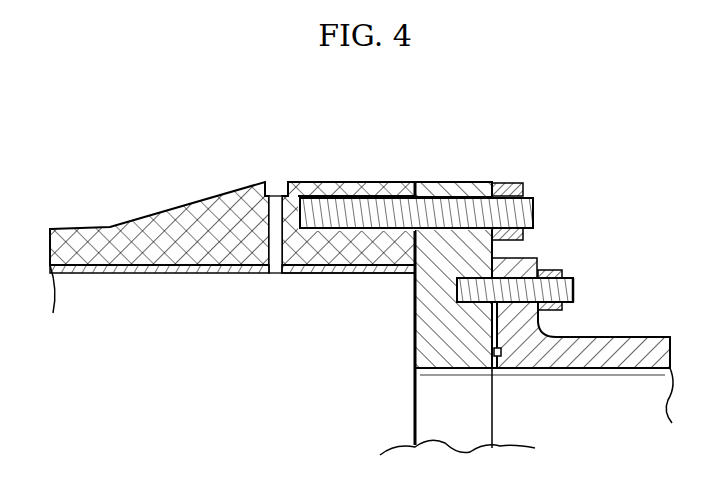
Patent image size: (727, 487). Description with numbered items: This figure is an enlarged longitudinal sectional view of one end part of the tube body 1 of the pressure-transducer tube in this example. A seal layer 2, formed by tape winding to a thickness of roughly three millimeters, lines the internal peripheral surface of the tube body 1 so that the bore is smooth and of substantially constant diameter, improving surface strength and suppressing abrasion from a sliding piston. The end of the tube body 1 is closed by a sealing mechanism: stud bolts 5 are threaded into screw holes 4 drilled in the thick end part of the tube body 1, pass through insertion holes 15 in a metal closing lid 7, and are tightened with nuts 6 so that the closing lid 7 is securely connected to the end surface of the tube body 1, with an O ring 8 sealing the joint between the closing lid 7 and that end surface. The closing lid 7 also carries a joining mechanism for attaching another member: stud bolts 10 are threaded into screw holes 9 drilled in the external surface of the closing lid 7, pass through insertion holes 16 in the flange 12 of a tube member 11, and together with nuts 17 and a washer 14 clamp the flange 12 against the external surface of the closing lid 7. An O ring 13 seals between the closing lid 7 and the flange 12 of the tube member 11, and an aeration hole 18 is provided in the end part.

The laminated panel 1 is at (112, 225).
The seal layer 2 is at (222, 273).
The screw holes 4 is at (345, 192).
The stud bolts 5 is at (367, 198).
The nuts 6 is at (513, 186).
The closing lid 7 is at (448, 184).
The O ring 8 is at (373, 272).
The screw holes 9 is at (467, 292).
The stud bolts 10 is at (573, 280).
The tube member 11 is at (623, 342).
The flange 12 is at (530, 250).
The O ring 13 is at (503, 372).
The washer 14 is at (495, 186).
The insertion holes 15 is at (440, 184).
The insertion holes 16 is at (517, 290).
The nuts 17 is at (553, 271).
The aeration hole 18 is at (275, 184).